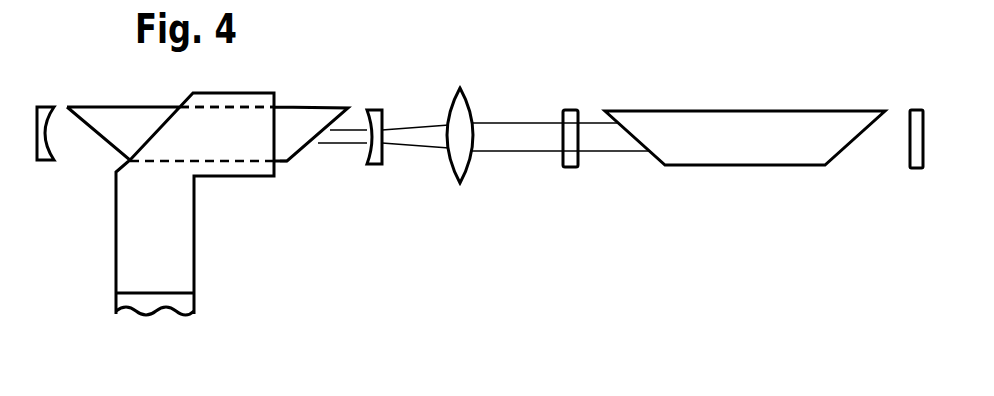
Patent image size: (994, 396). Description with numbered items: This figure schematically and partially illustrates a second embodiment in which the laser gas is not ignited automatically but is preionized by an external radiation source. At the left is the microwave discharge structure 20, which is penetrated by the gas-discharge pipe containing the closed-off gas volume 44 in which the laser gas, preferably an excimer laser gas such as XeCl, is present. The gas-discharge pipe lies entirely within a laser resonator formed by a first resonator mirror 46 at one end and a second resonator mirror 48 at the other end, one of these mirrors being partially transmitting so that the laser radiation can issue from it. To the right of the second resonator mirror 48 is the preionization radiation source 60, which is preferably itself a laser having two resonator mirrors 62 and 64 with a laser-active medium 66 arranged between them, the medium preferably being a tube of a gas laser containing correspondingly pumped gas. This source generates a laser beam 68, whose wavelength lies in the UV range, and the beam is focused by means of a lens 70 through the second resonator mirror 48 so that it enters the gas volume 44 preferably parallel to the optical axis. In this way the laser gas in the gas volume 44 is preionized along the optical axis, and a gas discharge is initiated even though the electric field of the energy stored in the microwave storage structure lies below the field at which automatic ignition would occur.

The microwave discharge structure 20 is at (203, 193).
The gas volume 44 is at (243, 128).
The first resonator mirror 46 is at (43, 110).
The second resonator mirror 48 is at (372, 110).
The preionization radiation source 60 is at (700, 108).
The resonator mirror 62 is at (570, 110).
The resonator mirror 64 is at (918, 120).
The laser-active medium 66 is at (795, 133).
The laser beam 68 is at (523, 146).
The lens 70 is at (458, 107).